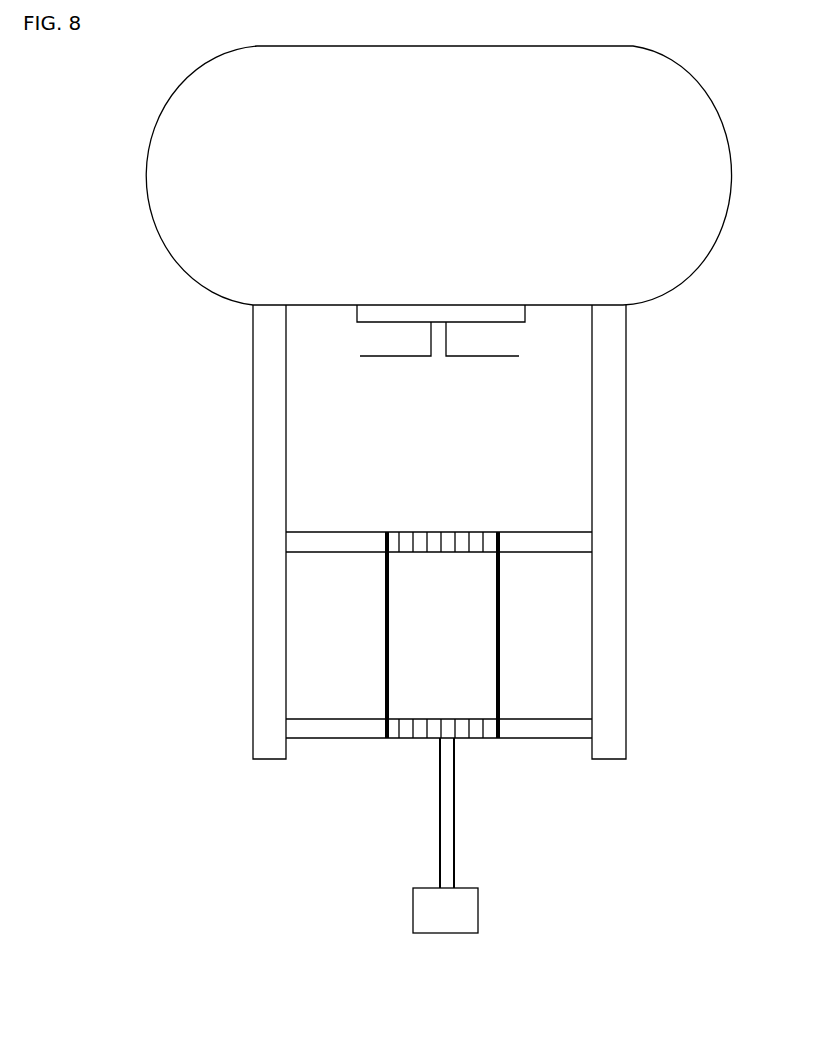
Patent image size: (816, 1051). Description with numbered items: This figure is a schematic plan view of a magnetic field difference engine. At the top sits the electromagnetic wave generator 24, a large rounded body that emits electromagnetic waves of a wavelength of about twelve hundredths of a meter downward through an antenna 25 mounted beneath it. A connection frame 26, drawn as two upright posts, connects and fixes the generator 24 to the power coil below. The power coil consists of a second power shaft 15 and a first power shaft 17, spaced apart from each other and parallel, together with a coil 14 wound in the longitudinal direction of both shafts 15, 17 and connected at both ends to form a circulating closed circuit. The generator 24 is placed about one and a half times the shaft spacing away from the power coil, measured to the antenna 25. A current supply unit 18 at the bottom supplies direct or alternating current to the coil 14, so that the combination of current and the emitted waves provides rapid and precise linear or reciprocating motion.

The electromagnetic wave generator 24 is at (197, 234).
The connection frame 26 is at (257, 492).
The antenna 25 is at (408, 358).
The second power shaft 15 is at (544, 533).
The first power shaft 17 is at (562, 719).
The coil 14 is at (498, 632).
The current supply unit 18 is at (479, 905).